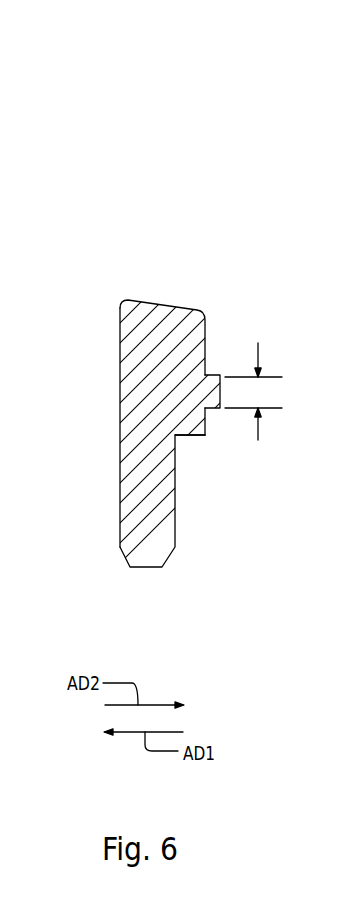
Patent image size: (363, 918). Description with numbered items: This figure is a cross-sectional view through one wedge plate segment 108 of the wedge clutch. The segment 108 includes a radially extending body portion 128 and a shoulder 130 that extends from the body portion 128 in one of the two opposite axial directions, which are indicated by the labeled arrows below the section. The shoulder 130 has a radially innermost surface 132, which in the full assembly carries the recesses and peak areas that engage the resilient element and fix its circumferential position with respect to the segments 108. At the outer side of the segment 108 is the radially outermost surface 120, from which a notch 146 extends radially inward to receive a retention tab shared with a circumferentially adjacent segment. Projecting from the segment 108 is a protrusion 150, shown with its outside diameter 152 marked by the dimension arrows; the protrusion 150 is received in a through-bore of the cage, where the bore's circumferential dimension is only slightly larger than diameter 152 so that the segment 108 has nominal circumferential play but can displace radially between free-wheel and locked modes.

The wedge plate segment 108 is at (231, 164).
The radially outermost surface 120 is at (163, 303).
The body portion 128 is at (116, 420).
The shoulder 130 is at (196, 427).
The radially innermost surface 132 is at (190, 435).
The notch 146 is at (15, 383).
The protrusion 150 is at (218, 373).
The outside diameter 152 is at (258, 427).